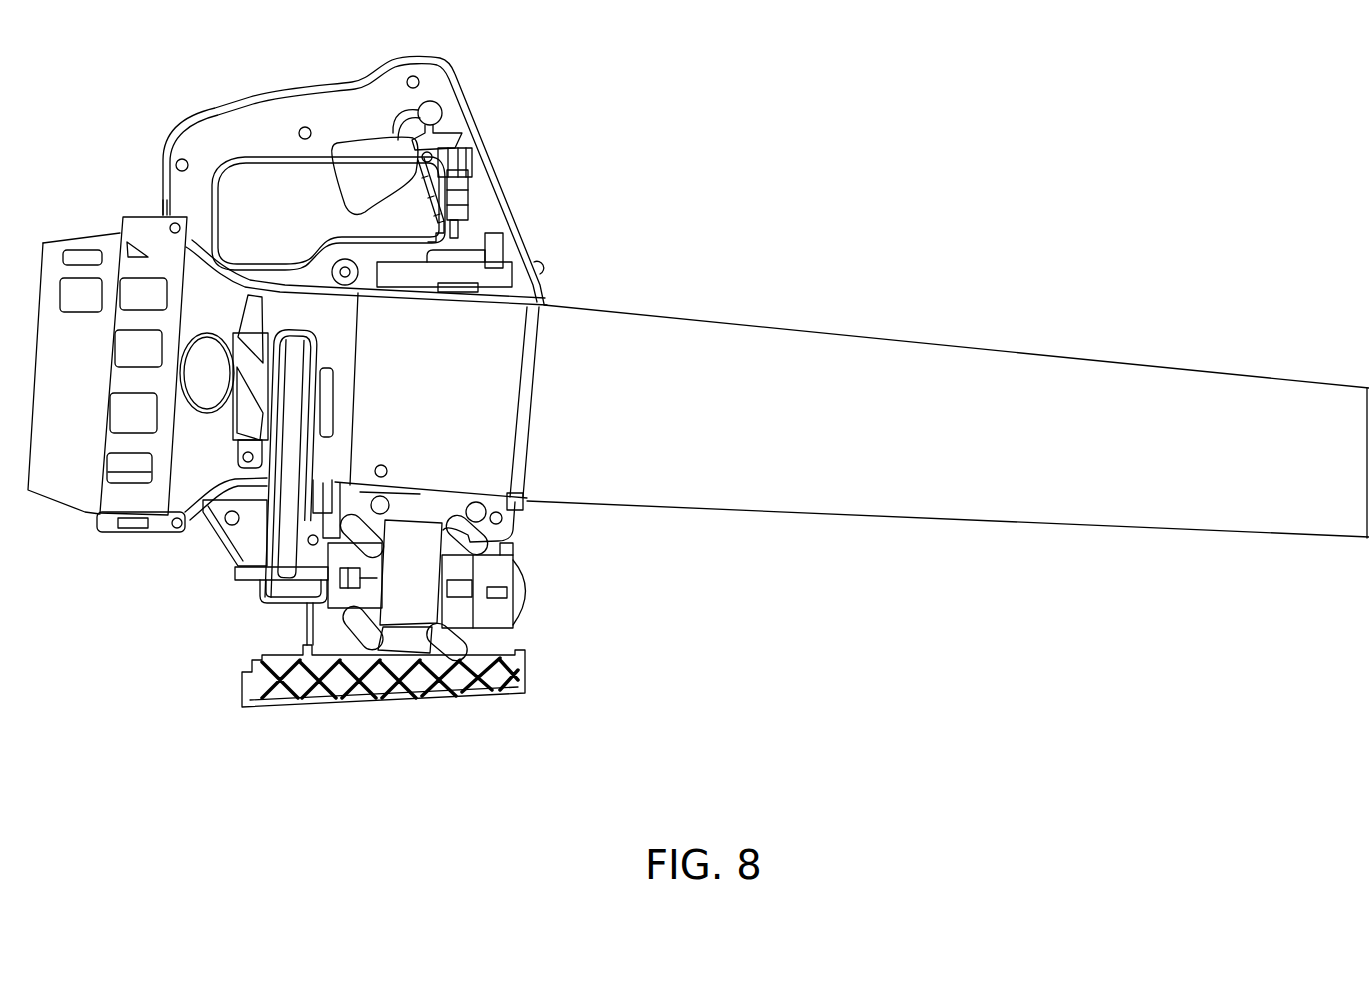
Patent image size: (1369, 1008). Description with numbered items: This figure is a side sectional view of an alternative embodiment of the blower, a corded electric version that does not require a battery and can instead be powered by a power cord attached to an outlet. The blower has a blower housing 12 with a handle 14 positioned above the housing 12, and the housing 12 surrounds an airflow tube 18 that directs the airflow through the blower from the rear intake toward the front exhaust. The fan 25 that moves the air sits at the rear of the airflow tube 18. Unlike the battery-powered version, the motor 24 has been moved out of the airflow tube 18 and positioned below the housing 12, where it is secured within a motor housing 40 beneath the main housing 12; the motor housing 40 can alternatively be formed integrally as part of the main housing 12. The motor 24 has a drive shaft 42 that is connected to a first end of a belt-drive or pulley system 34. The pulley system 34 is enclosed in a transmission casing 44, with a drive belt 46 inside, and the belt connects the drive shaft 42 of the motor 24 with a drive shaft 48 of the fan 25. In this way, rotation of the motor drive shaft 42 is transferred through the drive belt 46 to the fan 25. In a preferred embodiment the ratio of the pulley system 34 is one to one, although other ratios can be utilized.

The blower housing 12 is at (542, 225).
The handle 14 is at (293, 112).
The airflow tube 18 is at (664, 327).
The motor 24 is at (522, 610).
The fan 25 is at (243, 326).
The pulley system 34 is at (330, 345).
The motor housing 40 is at (418, 688).
The drive shaft 42 is at (295, 585).
The transmission casing 44 is at (258, 538).
The drive belt 46 is at (300, 420).
The drive shaft 48 is at (280, 333).